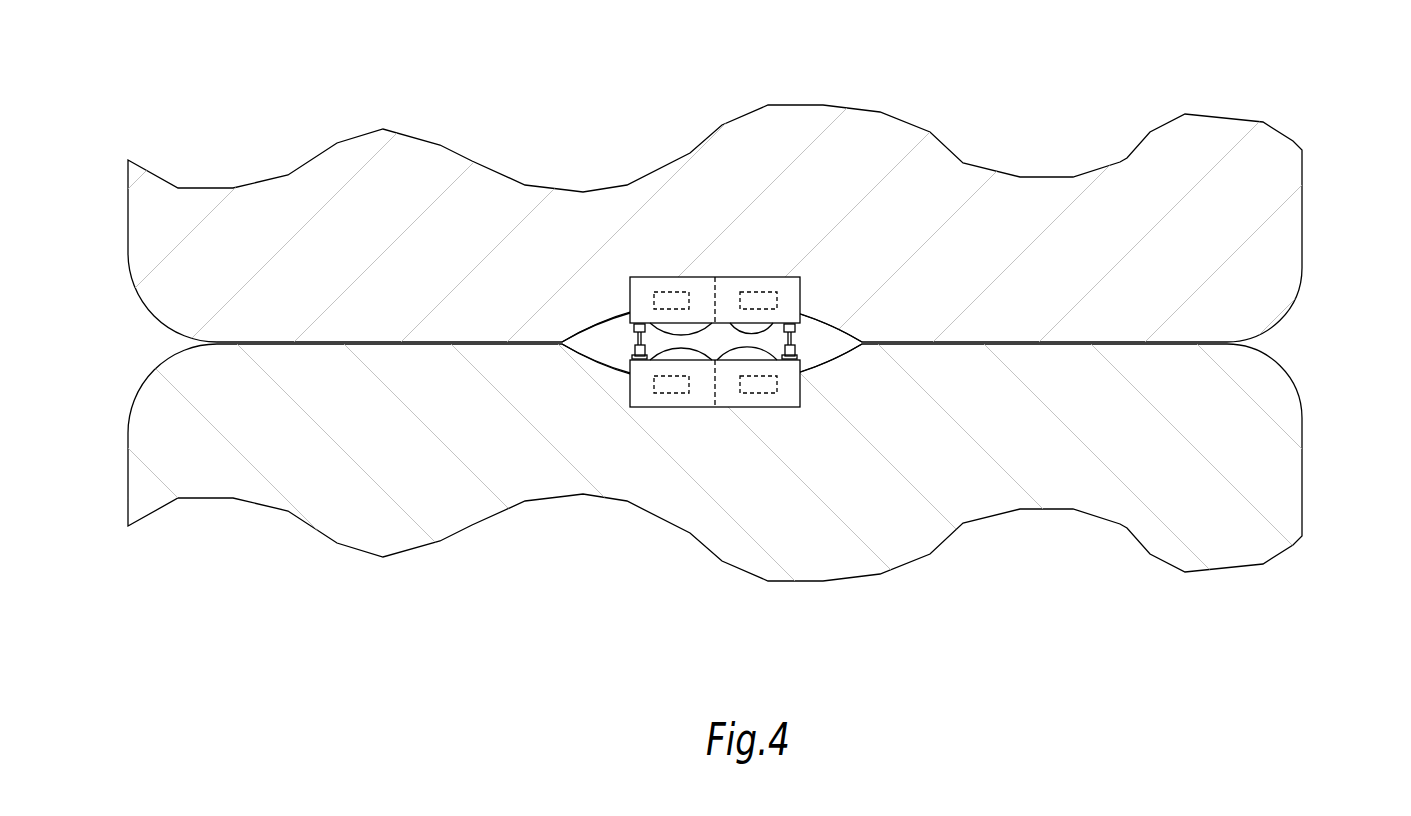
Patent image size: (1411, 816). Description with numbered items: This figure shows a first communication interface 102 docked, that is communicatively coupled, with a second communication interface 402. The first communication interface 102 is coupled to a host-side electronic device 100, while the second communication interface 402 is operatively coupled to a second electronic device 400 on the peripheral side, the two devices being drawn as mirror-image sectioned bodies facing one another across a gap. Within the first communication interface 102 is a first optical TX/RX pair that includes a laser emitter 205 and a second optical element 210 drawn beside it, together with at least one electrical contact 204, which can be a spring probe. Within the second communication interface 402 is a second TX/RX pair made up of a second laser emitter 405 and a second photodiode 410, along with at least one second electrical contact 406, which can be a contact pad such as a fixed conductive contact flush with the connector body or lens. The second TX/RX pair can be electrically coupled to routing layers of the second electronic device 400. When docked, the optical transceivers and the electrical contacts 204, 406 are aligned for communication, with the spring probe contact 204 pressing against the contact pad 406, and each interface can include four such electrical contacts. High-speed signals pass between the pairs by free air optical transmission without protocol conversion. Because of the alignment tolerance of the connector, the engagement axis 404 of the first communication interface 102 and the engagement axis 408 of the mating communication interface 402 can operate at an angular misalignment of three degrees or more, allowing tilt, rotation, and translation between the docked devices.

The second electronic device 400 is at (1283, 250).
The electronic device 100 is at (1278, 472).
The second electrical contact 406 is at (805, 318).
The electrical contact 204 is at (805, 368).
The first communication interface 102 is at (647, 428).
The second communication interface 402 is at (657, 277).
The second laser emitter 405 is at (672, 292).
The second photodiode 410 is at (760, 292).
The engagement axis of the mating communication interface 408 is at (717, 277).
The engagement axis of the communication interface 404 is at (715, 407).
The laser emitter 205 is at (670, 393).
The fourth electronic component 210 is at (758, 393).